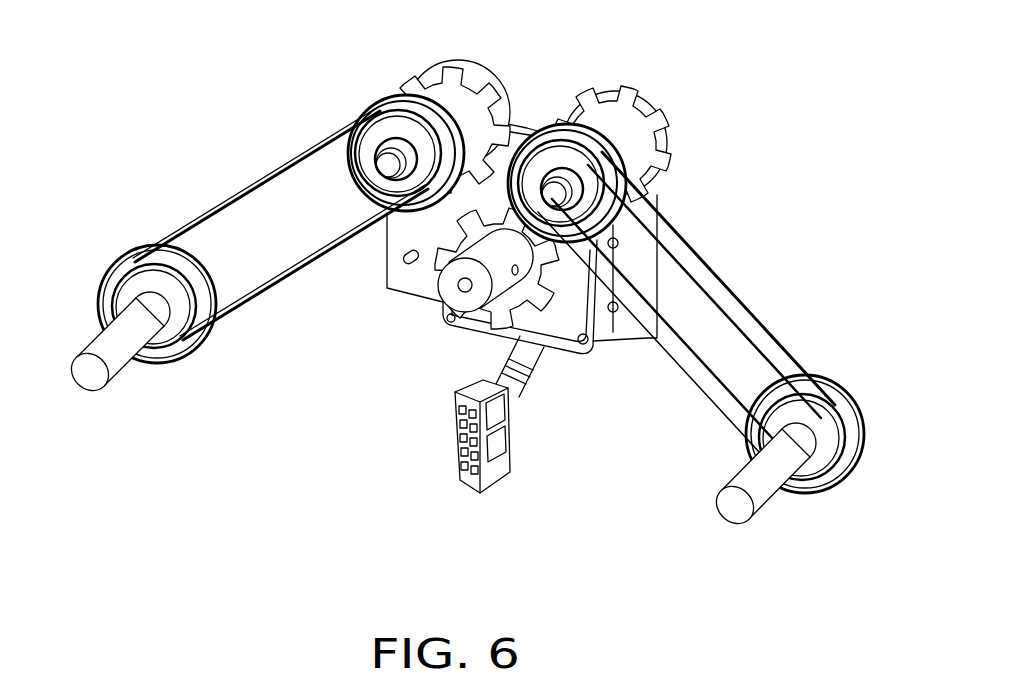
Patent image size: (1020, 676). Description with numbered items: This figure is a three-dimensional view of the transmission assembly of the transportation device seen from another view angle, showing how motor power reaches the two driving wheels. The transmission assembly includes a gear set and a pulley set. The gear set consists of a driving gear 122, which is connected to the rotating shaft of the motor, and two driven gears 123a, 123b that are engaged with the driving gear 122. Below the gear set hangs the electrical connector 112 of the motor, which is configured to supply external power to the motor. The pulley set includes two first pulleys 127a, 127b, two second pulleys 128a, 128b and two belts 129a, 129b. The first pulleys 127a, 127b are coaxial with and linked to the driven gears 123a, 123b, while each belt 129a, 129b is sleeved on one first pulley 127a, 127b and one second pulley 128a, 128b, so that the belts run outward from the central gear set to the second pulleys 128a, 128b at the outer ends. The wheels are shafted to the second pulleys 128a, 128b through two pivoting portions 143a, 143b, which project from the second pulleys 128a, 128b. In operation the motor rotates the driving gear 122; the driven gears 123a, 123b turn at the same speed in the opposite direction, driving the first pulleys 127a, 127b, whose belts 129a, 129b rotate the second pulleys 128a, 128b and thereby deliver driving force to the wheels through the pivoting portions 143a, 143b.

The electrical connector 112 is at (465, 484).
The driving gear 122 is at (507, 317).
The driven gear 123a is at (587, 112).
The driven gear 123b is at (410, 68).
The first pulley 127a is at (574, 172).
The first pulley 127b is at (383, 137).
The second pulley 128a is at (800, 496).
The second pulley 128b is at (150, 363).
The belt 129a is at (705, 272).
The belt 129b is at (244, 193).
The pivoting portion 143a is at (722, 508).
The pivoting portion 143b is at (83, 382).